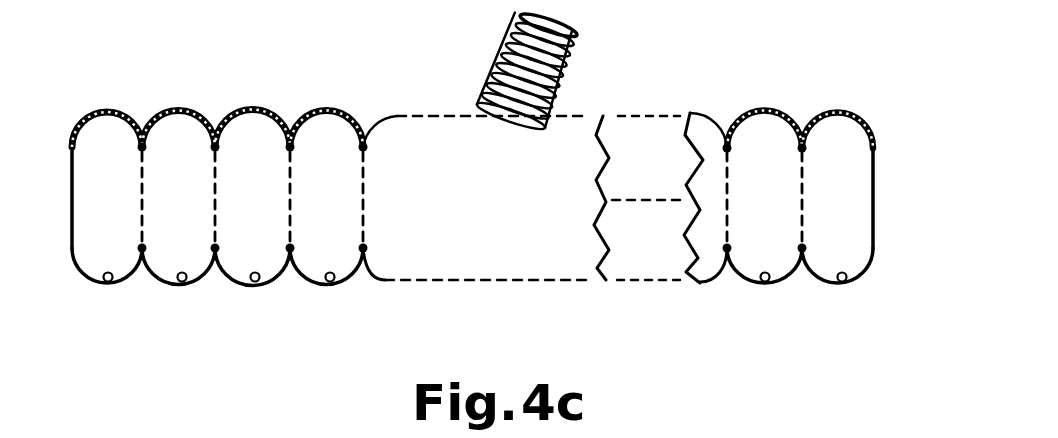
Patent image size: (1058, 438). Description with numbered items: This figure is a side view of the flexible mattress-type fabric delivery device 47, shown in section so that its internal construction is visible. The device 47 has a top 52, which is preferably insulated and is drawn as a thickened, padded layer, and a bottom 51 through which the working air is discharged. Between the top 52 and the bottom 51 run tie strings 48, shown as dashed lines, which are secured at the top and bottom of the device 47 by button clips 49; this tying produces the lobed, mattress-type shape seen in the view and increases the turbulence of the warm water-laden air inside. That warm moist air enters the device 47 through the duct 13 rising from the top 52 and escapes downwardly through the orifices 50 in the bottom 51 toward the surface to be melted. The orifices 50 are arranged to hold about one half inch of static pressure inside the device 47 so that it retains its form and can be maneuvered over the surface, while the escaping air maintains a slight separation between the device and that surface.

The duct 13 is at (565, 67).
The flexible mattress-type fabric delivery device 47 is at (700, 87).
The tie strings 48 is at (363, 188).
The button clips 49 is at (290, 143).
The orifices 50 is at (256, 318).
The bottom 51 is at (354, 281).
The top 52 is at (186, 110).